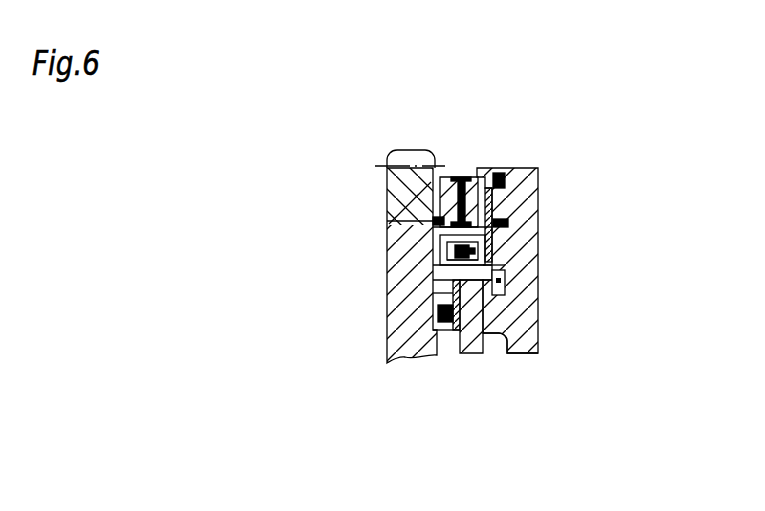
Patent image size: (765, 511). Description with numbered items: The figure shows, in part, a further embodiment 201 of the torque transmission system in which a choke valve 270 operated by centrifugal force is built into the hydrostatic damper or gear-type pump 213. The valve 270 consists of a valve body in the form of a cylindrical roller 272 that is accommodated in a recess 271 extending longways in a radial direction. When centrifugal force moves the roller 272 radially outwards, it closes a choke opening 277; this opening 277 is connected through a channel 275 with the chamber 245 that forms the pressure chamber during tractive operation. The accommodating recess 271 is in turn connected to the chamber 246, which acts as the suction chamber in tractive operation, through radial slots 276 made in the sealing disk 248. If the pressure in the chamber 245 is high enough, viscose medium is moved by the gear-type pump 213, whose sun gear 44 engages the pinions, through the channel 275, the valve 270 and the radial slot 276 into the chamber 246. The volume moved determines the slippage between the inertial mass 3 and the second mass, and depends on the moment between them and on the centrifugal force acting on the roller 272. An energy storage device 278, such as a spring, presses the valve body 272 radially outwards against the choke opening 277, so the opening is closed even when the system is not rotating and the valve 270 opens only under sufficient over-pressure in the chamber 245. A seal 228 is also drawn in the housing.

The further embodiment 201 is at (473, 160).
The inertial mass 3 is at (410, 193).
The choke opening 277 is at (445, 229).
The channel 275 is at (455, 250).
The recess 271 is at (455, 255).
The energy storage device 278 is at (462, 263).
The seal 228 is at (455, 318).
The chamber 245 is at (445, 285).
The sun gear 44 is at (475, 318).
The gear-type pump 213 is at (516, 350).
The sealing disk 248 is at (505, 305).
The chamber 246 is at (493, 312).
The radial slots 276 is at (500, 271).
The cylindrical roller 272 is at (487, 245).
The choke valve 270 is at (493, 225).